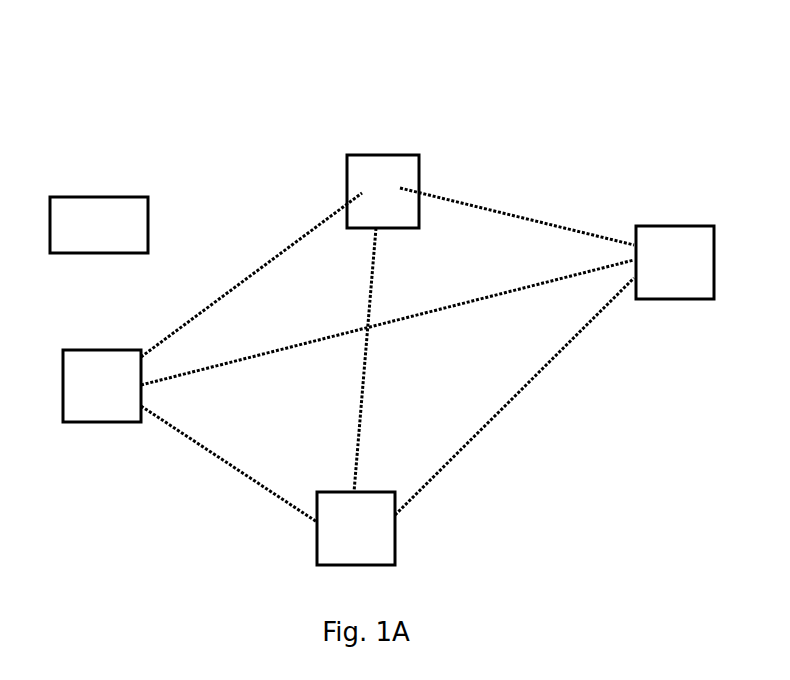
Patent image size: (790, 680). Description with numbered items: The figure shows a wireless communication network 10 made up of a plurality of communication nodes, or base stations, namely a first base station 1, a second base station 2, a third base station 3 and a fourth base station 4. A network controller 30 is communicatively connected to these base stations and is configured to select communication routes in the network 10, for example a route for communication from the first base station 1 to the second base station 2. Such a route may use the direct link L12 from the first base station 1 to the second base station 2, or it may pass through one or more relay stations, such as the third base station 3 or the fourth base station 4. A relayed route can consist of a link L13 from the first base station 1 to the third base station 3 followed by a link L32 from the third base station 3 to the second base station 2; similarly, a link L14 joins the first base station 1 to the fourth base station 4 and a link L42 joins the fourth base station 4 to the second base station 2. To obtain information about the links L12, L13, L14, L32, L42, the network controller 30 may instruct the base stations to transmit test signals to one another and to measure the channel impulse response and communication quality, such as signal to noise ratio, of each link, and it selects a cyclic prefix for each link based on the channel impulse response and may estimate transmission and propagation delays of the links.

The wireless communication network 10 is at (119, 63).
The network controller 30 is at (84, 240).
The first base station 1 is at (94, 398).
The second base station 2 is at (667, 274).
The third base station 3 is at (375, 204).
The fourth base station 4 is at (348, 540).
The link L13 is at (257, 272).
The direct link L12 is at (314, 343).
The link L32 is at (533, 220).
The link L14 is at (280, 497).
The link L42 is at (447, 462).